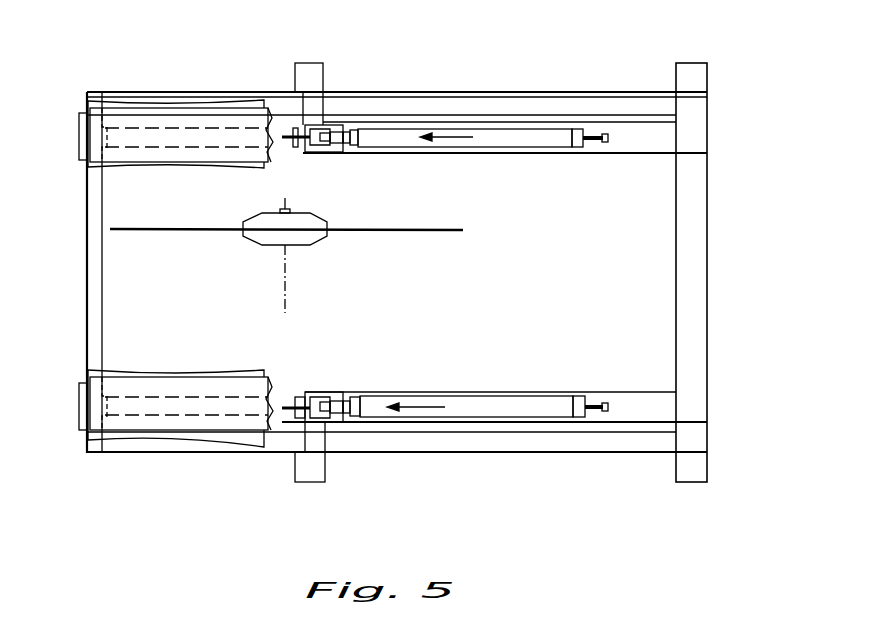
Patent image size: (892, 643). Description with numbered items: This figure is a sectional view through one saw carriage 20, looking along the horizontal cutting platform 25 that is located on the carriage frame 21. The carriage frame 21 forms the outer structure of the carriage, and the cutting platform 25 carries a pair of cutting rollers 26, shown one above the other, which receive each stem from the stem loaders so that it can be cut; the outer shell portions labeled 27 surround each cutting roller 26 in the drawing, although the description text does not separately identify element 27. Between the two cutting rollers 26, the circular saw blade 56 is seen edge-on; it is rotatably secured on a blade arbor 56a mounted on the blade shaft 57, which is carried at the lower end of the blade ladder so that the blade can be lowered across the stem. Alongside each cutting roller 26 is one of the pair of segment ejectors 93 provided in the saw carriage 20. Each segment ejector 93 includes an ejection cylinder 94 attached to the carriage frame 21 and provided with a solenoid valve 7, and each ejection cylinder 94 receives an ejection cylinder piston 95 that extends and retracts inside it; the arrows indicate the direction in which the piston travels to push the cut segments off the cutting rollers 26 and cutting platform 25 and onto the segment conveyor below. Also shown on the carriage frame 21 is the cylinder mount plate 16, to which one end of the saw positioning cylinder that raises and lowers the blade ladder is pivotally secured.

The solenoid valve 7 is at (455, 141).
The cylinder mount plate 16 is at (603, 147).
The saw carriage 20 is at (344, 72).
The carriage frame 21 is at (421, 86).
The cutting platform 25 is at (253, 92).
The cutting rollers 26 is at (214, 92).
The shell 27 is at (113, 102).
The circular saw blade 56 is at (380, 231).
The blade arbor 56a is at (256, 217).
The blade shaft 57 is at (285, 302).
The segment ejector 93 is at (488, 152).
The ejection cylinder 94 is at (557, 153).
The ejection cylinder piston 95 is at (347, 153).